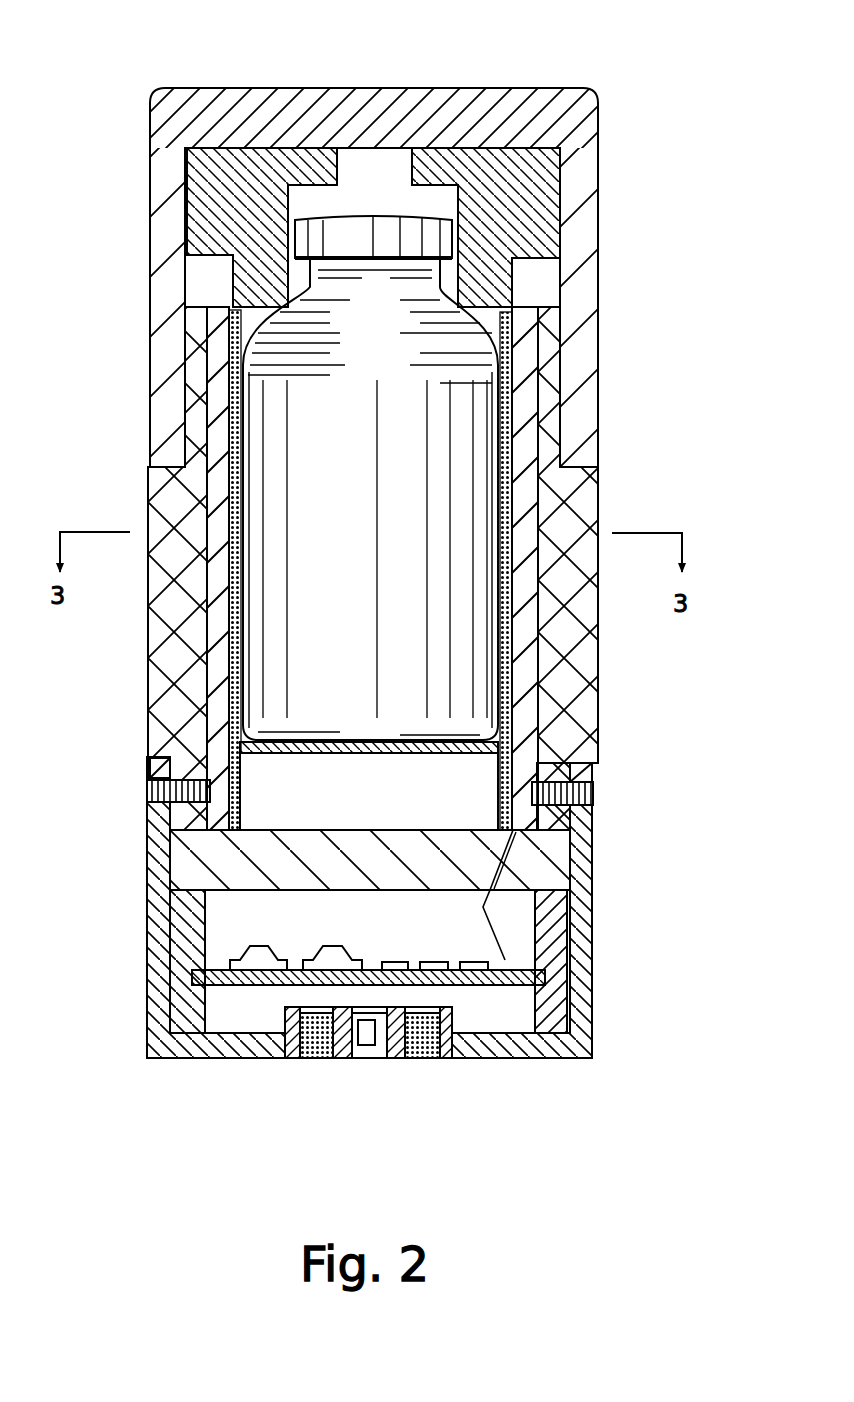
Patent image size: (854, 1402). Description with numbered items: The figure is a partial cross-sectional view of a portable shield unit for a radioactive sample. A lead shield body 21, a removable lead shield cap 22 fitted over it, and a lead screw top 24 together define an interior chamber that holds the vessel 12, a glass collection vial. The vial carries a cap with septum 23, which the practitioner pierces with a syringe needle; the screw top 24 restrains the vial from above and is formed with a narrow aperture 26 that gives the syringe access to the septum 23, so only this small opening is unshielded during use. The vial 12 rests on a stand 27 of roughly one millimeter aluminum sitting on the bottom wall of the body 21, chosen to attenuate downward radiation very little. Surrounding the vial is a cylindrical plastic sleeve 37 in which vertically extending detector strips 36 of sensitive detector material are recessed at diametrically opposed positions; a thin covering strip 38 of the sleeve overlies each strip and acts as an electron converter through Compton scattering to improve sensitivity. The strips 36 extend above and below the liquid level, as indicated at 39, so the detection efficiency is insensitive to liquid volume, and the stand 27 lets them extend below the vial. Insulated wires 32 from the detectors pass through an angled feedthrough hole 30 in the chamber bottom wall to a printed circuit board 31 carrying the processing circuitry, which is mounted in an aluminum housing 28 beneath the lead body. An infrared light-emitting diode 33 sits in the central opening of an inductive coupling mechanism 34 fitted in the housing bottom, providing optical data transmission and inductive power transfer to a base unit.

The vessel 12 is at (478, 499).
The shield body 21 is at (431, 670).
The removable shield cap 22 is at (432, 277).
The cap with septum 23 is at (316, 129).
The screw top 24 is at (383, 160).
The aperture 26 is at (350, 33).
The stand 27 is at (369, 786).
The aluminum housing 28 is at (430, 907).
The feedthrough hole 30 is at (700, 845).
The printed circuit board 31 is at (324, 1049).
The insulated wires 32 is at (472, 900).
The infrared light-emitting diode 33 is at (328, 1078).
The inductive coupling mechanism 34 is at (368, 1072).
The detector strips 36 is at (377, 570).
The cylindrical plastic sleeve 37 is at (289, 568).
The covering strip 38 is at (144, 291).
The detector strip extension above and below liquid level 39 is at (606, 543).